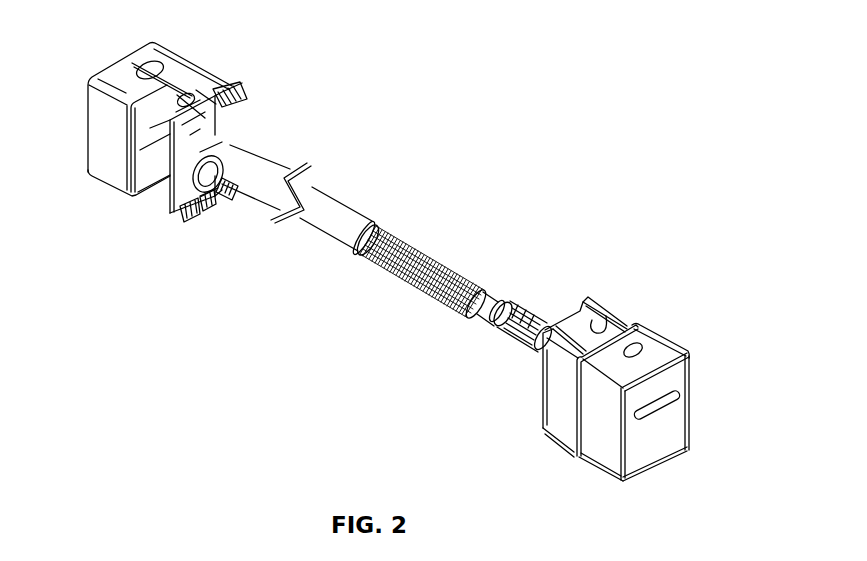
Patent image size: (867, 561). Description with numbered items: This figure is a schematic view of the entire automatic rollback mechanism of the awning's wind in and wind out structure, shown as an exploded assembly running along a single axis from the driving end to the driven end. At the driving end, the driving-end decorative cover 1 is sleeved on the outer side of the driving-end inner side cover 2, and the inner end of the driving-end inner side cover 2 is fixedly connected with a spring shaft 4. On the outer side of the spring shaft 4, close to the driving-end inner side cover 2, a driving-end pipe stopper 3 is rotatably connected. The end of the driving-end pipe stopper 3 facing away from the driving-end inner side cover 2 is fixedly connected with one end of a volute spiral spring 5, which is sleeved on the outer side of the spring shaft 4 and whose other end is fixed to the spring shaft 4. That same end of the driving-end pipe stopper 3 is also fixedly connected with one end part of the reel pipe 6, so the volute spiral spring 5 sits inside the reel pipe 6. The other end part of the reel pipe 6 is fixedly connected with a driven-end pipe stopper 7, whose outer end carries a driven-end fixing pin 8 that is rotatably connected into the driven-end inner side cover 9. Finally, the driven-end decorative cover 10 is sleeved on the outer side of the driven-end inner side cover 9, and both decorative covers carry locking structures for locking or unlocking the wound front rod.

The driving-end decorative cover 1 is at (661, 431).
The driving-end inner side cover 2 is at (553, 398).
The driving-end pipe stopper 3 is at (496, 323).
The spring shaft 4 is at (491, 301).
The volute spiral spring 5 is at (434, 268).
The reel pipe 6 is at (331, 231).
The driven-end pipe stopper 7 is at (243, 147).
The driven-end fixing pin 8 is at (222, 148).
The driven-end inner side cover 9 is at (153, 201).
The driven-end decorative cover 10 is at (97, 171).